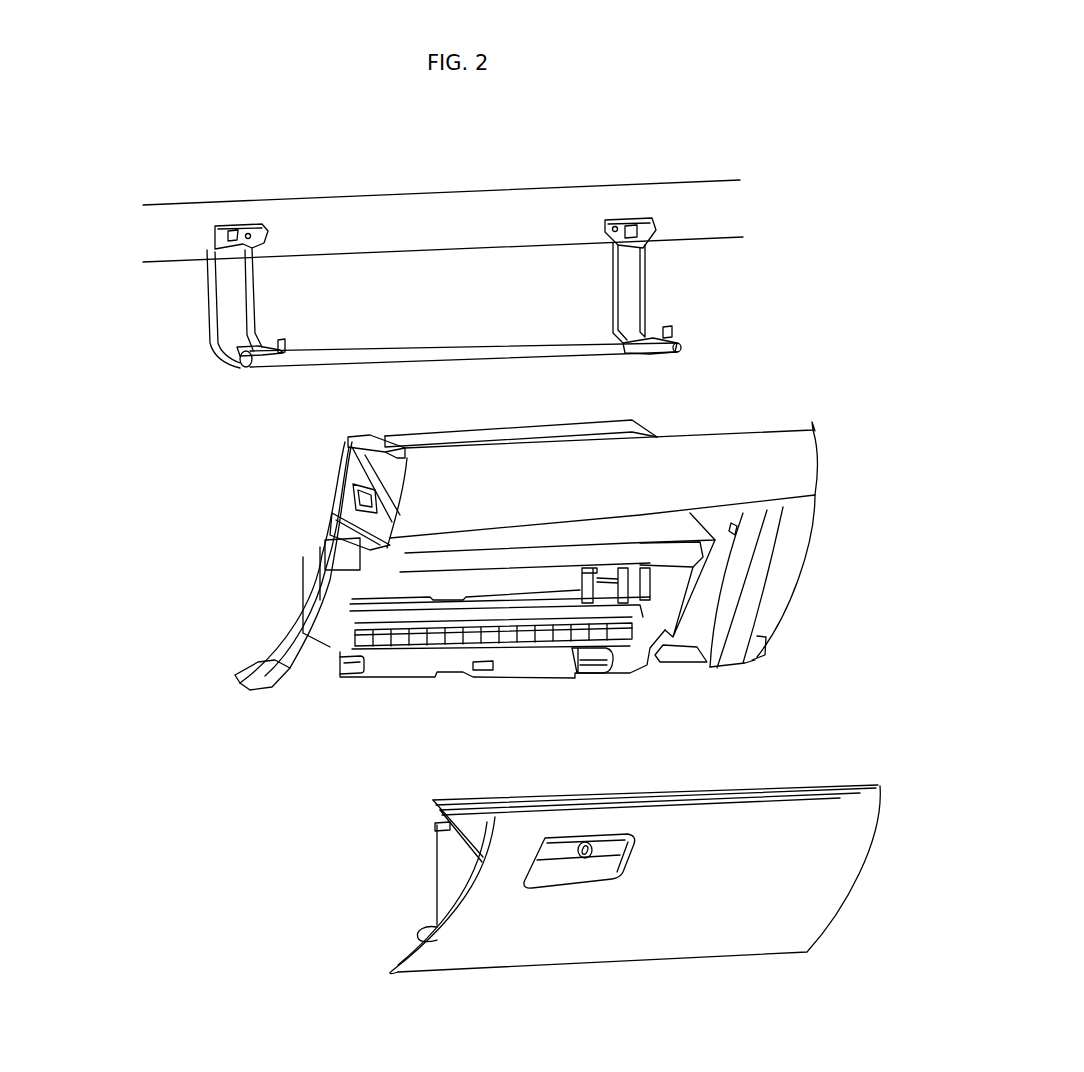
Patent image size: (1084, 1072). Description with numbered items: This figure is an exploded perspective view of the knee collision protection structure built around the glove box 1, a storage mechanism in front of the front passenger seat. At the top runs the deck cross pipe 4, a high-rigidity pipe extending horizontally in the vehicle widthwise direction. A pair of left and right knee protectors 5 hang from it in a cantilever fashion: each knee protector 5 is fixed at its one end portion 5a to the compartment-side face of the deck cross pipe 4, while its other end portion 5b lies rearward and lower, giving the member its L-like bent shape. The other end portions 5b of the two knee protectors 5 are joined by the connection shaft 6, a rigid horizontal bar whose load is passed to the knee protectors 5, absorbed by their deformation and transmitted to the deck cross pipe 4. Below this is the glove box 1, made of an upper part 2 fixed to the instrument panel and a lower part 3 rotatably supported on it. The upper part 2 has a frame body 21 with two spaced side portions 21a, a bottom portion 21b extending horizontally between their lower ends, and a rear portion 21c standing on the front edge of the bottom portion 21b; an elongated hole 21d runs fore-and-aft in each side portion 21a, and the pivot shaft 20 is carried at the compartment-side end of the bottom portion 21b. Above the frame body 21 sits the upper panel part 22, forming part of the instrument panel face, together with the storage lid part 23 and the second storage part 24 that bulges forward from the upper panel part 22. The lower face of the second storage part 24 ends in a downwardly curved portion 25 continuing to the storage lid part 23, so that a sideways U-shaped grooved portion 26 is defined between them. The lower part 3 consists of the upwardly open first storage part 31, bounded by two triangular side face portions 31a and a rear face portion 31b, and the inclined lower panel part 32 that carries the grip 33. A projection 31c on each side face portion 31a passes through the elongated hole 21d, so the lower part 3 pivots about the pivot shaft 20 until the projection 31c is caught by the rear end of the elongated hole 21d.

The glove box 1 is at (862, 660).
The upper part 2 is at (808, 656).
The lower part 3 is at (822, 754).
The deck cross pipe 4 is at (712, 184).
The knee protector 5 is at (201, 309).
The one end portion 5a is at (248, 228).
The other end portion 5b is at (264, 370).
The connection shaft 6 is at (458, 340).
The pivot shaft 20 is at (355, 678).
The frame body 21 is at (583, 684).
The side portion 21a is at (720, 525).
The bottom portion 21b is at (400, 672).
The rear portion 21c is at (510, 618).
The elongated hole 21d is at (333, 553).
The upper panel part 22 is at (777, 452).
The storage lid part 23 is at (333, 528).
The second storage part 24 is at (336, 462).
The curved portion 25 is at (704, 557).
The grooved portion 26 is at (341, 504).
The first storage part 31 is at (432, 853).
The side face portion 31a is at (445, 880).
The rear face portion 31b is at (480, 826).
The projection 31c is at (438, 826).
The lower panel part 32 is at (833, 877).
The grip 33 is at (575, 870).